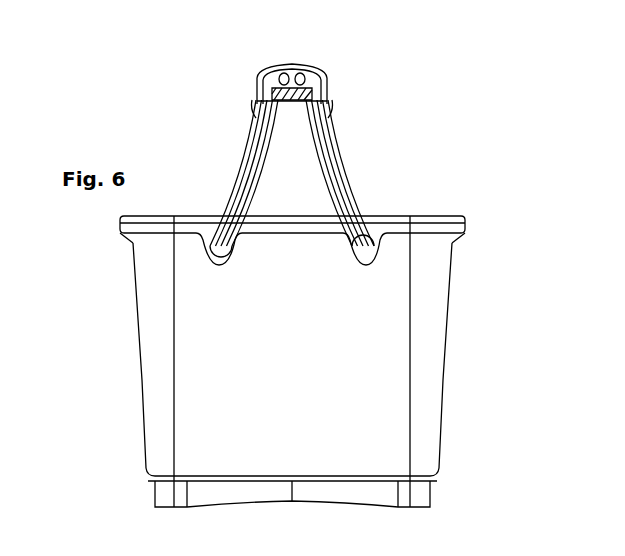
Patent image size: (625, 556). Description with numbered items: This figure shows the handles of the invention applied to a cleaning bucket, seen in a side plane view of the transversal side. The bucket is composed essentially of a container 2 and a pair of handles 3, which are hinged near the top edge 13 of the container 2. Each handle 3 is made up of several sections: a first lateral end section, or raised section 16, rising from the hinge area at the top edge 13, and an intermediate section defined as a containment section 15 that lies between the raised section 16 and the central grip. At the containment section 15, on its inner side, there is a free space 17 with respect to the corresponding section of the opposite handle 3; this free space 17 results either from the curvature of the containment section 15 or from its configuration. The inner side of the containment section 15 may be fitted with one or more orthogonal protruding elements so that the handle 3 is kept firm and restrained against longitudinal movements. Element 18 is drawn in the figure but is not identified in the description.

The container 2 is at (422, 331).
The handle 3 is at (313, 138).
The top edge 13 is at (393, 216).
The containment section 15 is at (257, 88).
The raised section 16 is at (238, 180).
The free space 17 is at (273, 68).
The opening 18 is at (312, 70).